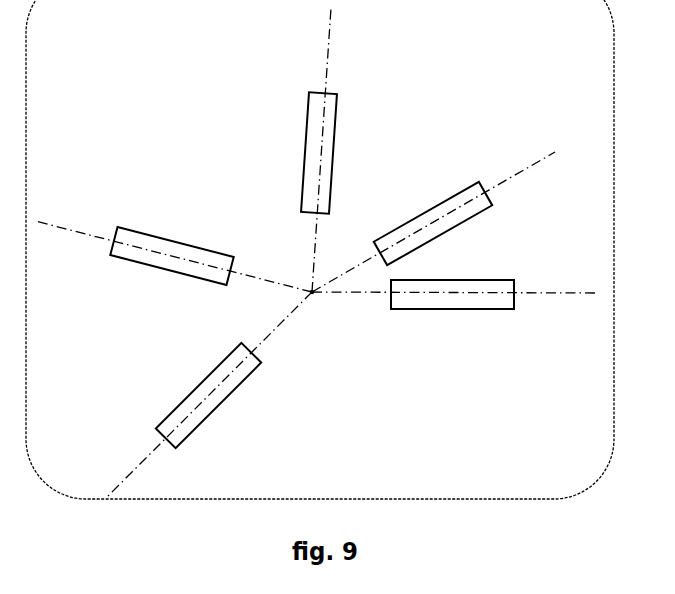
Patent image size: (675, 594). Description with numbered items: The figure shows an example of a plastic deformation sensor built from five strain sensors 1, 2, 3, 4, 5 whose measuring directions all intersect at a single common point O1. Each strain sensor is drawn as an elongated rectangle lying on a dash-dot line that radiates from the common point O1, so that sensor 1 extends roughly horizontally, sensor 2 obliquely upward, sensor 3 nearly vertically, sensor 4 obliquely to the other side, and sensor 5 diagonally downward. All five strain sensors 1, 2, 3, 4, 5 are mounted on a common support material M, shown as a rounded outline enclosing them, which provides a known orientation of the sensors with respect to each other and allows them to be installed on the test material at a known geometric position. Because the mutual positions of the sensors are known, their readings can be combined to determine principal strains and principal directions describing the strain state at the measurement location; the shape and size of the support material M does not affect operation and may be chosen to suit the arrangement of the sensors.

The strain sensor 1 is at (454, 309).
The strain sensor 2 is at (433, 222).
The strain sensor 3 is at (311, 150).
The strain sensor 4 is at (173, 250).
The strain sensor 5 is at (209, 394).
The support material M is at (320, 249).
The common point of intersection of directions O1 is at (332, 313).